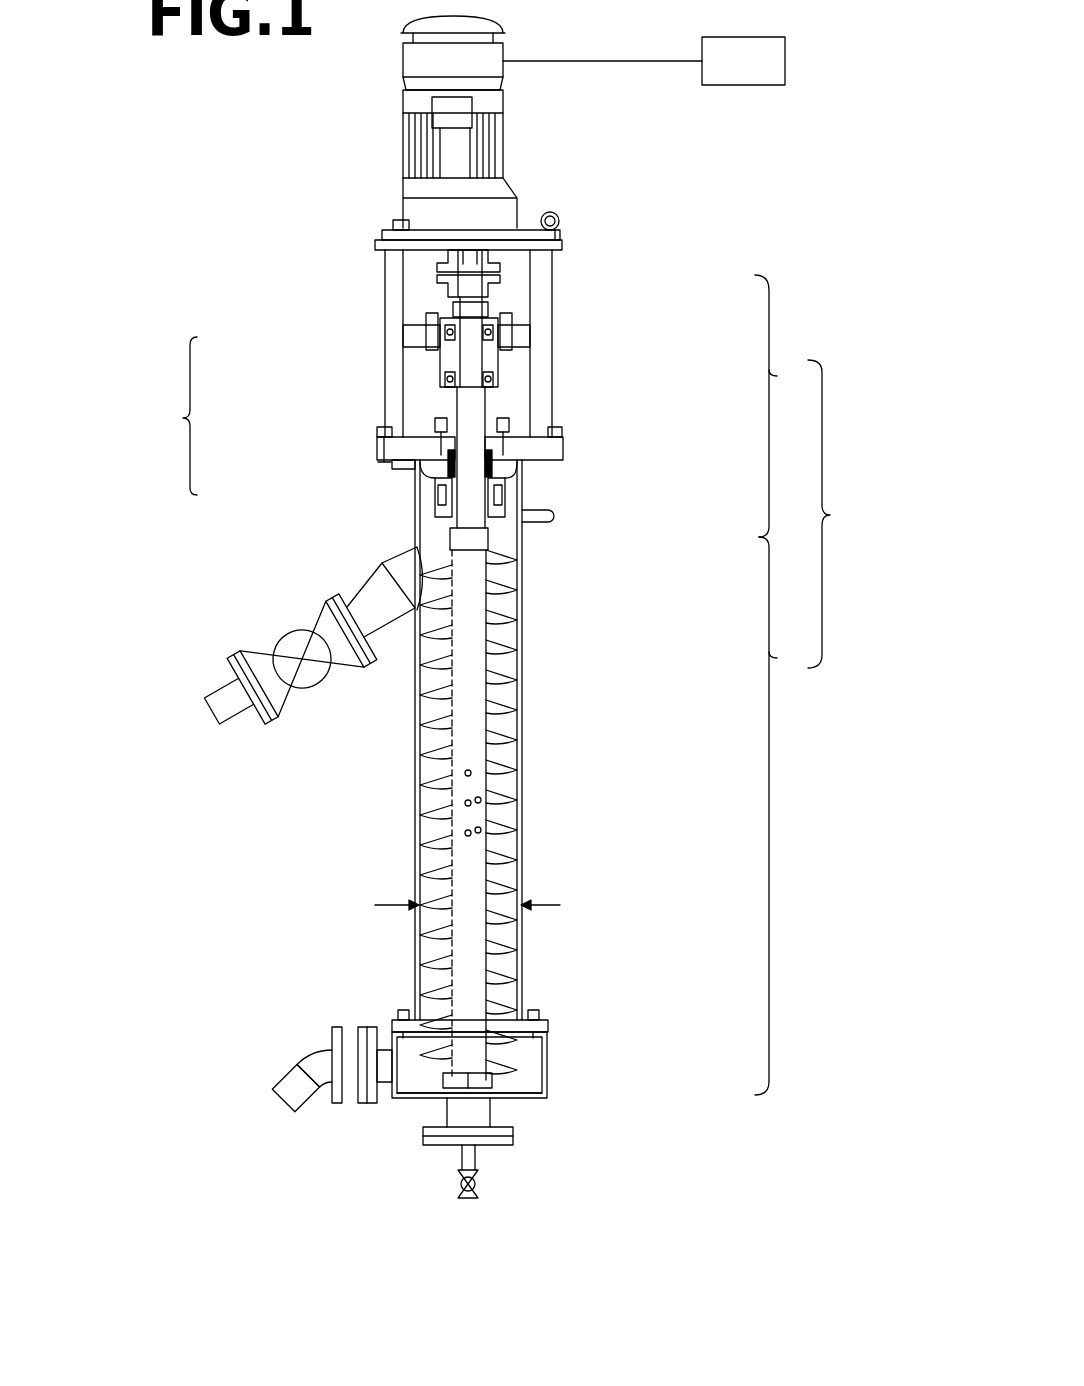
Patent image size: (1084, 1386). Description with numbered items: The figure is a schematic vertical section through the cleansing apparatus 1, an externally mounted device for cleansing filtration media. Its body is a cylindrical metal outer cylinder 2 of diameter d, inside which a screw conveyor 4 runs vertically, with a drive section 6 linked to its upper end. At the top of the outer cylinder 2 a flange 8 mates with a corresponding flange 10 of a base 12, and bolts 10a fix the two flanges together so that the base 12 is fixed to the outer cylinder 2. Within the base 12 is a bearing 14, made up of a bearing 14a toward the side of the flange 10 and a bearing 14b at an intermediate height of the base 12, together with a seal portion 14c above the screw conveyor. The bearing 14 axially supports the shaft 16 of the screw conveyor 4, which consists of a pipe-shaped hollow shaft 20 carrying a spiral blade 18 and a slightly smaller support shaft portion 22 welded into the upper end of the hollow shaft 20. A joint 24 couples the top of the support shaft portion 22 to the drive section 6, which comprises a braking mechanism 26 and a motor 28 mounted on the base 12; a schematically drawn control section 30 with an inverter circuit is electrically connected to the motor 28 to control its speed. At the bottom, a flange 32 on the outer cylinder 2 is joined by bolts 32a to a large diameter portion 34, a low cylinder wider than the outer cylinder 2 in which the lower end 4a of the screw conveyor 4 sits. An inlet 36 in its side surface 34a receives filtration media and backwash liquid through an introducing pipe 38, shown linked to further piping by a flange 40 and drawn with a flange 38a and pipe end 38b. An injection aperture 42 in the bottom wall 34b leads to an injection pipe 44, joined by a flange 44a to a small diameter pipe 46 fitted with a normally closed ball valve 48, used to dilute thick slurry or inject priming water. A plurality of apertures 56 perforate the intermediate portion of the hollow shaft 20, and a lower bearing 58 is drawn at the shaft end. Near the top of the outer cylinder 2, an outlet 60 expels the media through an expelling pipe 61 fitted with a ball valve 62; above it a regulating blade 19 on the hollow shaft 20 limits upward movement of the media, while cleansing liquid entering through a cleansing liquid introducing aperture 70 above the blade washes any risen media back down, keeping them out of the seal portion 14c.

The cleansing apparatus 1 is at (795, 184).
The outer cylinder 2 is at (522, 748).
The screw conveyor 4 is at (494, 658).
The lower end of the screw conveyor 4a is at (447, 1120).
The drive section 6 is at (446, 128).
The flange 8 is at (403, 450).
The flange 10 is at (562, 440).
The bolts 10a is at (380, 430).
The base 12 is at (556, 291).
The bearing 14 is at (340, 424).
The bearing 14a is at (435, 495).
The bearing 14b is at (430, 372).
The seal portion 14c is at (445, 505).
The shaft 16 is at (835, 514).
The spiral blade 18 is at (420, 752).
The regulating blade 19 is at (500, 540).
The hollow shaft 20 is at (782, 816).
The support shaft portion 22 is at (782, 406).
The joint 24 is at (434, 262).
The braking mechanism 26 is at (521, 203).
The motor 28 is at (510, 138).
The control section 30 is at (762, 37).
The flange 32 is at (536, 1020).
The bolts 32a is at (403, 1012).
The large diameter portion 34 is at (551, 1061).
The side surface 34a is at (393, 1037).
The bottom wall 34b is at (525, 1100).
The inlet 36 is at (378, 1066).
The introducing pipe 38 is at (277, 1078).
The discharge pipe flange 38a is at (368, 1084).
The discharge pipe end 38b is at (302, 1106).
The flange 40 is at (335, 1025).
The injection aperture 42 is at (457, 1085).
The injection pipe 44 is at (520, 1135).
The flange 44a is at (480, 1155).
The small diameter pipe 46 is at (480, 1178).
The ball valve 48 is at (483, 1192).
The apertures 56 is at (462, 773).
The lower bearing 58 is at (495, 1078).
The outlet 60 is at (415, 575).
The expelling pipe 61 is at (211, 692).
The ball valve 62 is at (288, 633).
The cleansing liquid introducing aperture 70 is at (548, 512).
The diameter of the outer cylinder d is at (480, 905).